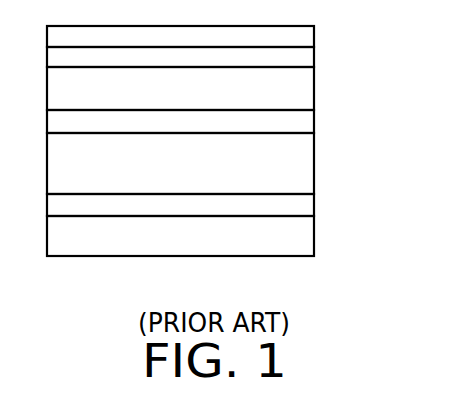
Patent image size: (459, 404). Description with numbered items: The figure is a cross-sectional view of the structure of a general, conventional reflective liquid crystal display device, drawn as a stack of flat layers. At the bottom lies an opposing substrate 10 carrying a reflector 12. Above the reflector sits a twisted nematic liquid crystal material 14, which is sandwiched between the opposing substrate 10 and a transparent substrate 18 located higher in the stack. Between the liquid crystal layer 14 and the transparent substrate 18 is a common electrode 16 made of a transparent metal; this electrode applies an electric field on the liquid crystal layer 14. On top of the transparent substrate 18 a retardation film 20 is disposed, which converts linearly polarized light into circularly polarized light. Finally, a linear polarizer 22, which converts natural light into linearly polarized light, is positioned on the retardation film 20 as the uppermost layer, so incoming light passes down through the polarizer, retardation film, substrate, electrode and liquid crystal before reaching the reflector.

The opposing substrate 10 is at (314, 235).
The reflector 12 is at (314, 202).
The twisted nematic liquid crystal material 14 is at (314, 161).
The common electrode 16 is at (314, 117).
The transparent substrate 18 is at (314, 87).
The retardation film 20 is at (314, 57).
The linear polarizer 22 is at (314, 37).